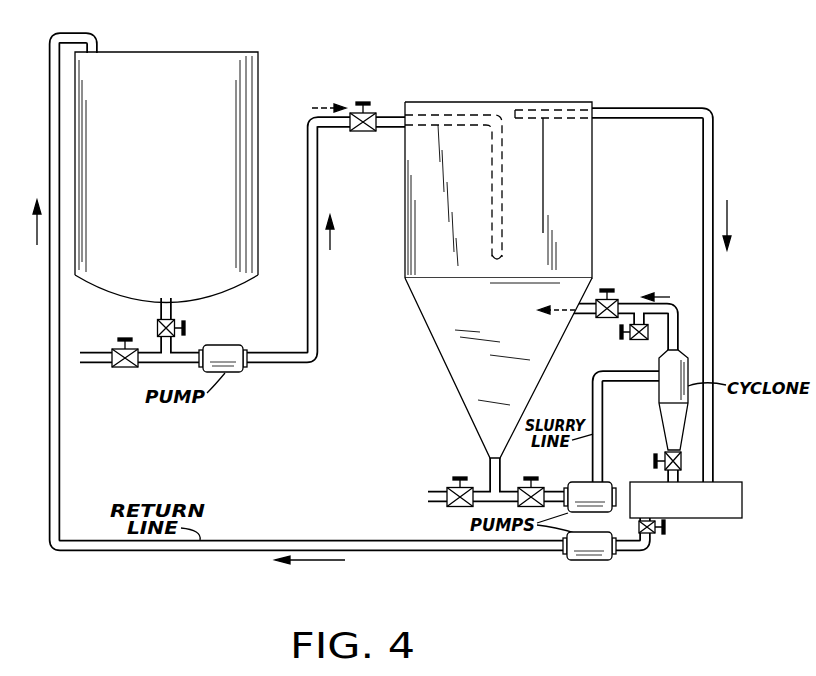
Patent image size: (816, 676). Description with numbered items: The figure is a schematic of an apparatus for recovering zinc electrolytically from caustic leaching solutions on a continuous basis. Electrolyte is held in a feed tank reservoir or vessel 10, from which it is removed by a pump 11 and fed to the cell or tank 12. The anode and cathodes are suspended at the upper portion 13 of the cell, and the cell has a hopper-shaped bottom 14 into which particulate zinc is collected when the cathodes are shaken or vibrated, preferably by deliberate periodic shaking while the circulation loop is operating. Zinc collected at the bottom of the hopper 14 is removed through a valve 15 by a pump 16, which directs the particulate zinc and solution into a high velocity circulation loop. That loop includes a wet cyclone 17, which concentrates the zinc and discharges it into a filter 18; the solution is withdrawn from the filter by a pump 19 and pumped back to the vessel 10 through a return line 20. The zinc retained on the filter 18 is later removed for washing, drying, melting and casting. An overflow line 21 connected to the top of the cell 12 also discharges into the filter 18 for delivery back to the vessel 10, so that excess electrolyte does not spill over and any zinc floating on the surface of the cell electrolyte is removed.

The feed tank reservoir 10 is at (197, 28).
The pump 11 is at (243, 346).
The cell 12 is at (500, 101).
The upper portion of the cell 13 is at (405, 183).
The hopper-shaped bottom 14 is at (447, 371).
The valve 15 is at (520, 487).
The pump 16 is at (584, 481).
The wet cyclone 17 is at (661, 425).
The filter 18 is at (712, 519).
The pump 19 is at (592, 561).
The line 20 is at (219, 551).
The overflow line 21 is at (676, 107).